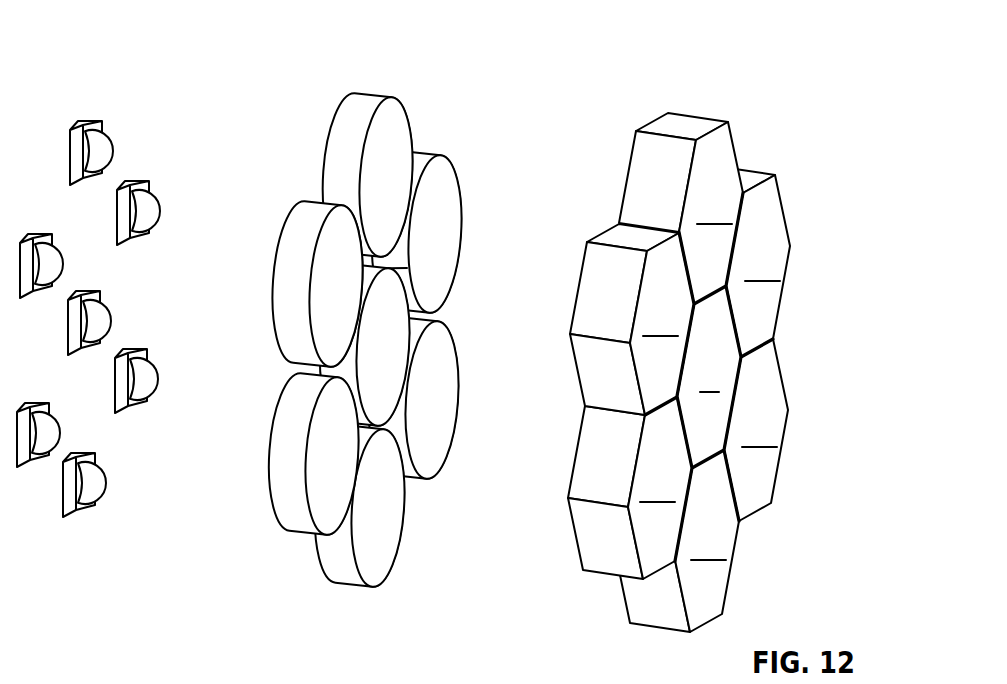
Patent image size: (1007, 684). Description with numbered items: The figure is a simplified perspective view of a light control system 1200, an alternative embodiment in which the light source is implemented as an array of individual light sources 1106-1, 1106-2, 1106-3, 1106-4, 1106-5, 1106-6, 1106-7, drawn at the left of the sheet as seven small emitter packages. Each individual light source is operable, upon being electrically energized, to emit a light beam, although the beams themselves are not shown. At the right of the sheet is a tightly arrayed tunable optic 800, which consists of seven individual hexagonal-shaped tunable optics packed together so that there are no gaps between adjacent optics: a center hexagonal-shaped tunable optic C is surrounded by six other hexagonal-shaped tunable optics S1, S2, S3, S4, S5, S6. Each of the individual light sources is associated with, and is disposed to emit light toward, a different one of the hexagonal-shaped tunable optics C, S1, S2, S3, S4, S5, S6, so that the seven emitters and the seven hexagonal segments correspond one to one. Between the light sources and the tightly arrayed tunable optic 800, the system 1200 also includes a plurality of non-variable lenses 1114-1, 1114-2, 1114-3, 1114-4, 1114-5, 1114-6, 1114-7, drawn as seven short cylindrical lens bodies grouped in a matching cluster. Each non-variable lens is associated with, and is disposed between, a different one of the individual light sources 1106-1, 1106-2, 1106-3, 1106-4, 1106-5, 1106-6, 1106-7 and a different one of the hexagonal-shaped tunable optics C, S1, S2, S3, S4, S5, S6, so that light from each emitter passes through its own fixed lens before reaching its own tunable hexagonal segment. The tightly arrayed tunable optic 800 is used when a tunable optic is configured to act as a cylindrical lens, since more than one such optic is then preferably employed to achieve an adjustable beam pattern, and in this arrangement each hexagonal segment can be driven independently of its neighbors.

The system 1200 is at (773, 57).
The tightly arrayed tunable optic 800 is at (733, 109).
The individual light source 1106-1 is at (95, 298).
The individual light source 1106-2 is at (97, 125).
The individual light source 1106-3 is at (45, 242).
The individual light source 1106-4 is at (43, 408).
The individual light source 1106-5 is at (92, 458).
The individual light source 1106-6 is at (143, 355).
The individual light source 1106-7 is at (150, 188).
The non-variable lens 1114-1 is at (392, 298).
The non-variable lens 1114-2 is at (393, 117).
The non-variable lens 1114-3 is at (335, 317).
The non-variable lens 1114-4 is at (328, 492).
The non-variable lens 1114-5 is at (373, 577).
The non-variable lens 1114-6 is at (432, 418).
The non-variable lens 1114-7 is at (437, 172).
The hexagonal-shaped tunable optic S1 is at (681, 208).
The hexagonal-shaped tunable optic S2 is at (632, 319).
The hexagonal-shaped tunable optic S3 is at (630, 488).
The hexagonal-shaped tunable optic S4 is at (677, 541).
The hexagonal-shaped tunable optic S5 is at (756, 430).
The hexagonal-shaped tunable optic S6 is at (736, 261).
The center hexagonal-shaped tunable optic C is at (709, 377).